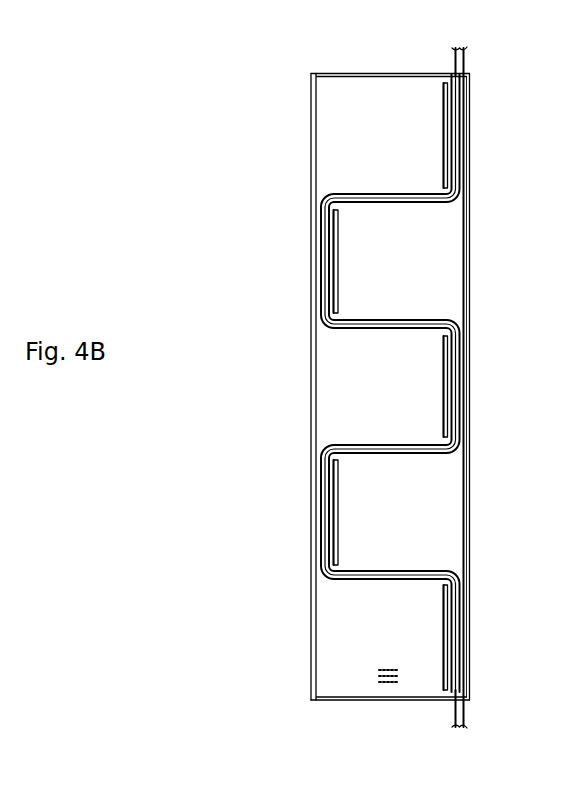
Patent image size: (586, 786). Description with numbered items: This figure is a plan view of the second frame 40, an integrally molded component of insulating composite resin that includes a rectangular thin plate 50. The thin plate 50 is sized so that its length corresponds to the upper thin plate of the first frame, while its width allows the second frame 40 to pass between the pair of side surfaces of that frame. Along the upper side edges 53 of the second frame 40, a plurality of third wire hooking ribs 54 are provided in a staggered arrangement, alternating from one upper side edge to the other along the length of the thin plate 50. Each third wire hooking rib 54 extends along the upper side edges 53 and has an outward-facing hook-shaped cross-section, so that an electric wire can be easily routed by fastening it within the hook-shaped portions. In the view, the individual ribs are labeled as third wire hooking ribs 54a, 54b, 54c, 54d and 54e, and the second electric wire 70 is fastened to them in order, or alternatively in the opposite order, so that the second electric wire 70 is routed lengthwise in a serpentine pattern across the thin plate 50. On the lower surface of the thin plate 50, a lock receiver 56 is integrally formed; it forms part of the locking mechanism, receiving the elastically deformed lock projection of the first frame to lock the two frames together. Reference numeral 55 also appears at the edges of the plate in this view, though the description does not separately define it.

The second frame 40 is at (272, 164).
The thin plate 50 is at (343, 74).
The upper side edges 53 is at (457, 263).
The third wire hooking ribs 54 is at (350, 497).
The third wire hooking rib 54a is at (438, 143).
The third wire hooking rib 54b is at (341, 262).
The third wire hooking rib 54c is at (438, 388).
The third wire hooking rib 54d is at (341, 536).
The fifth line segment 54e is at (438, 633).
The substrate edge 55 is at (470, 532).
The lock receiver 56 is at (386, 688).
The second electric wire 70 is at (466, 63).